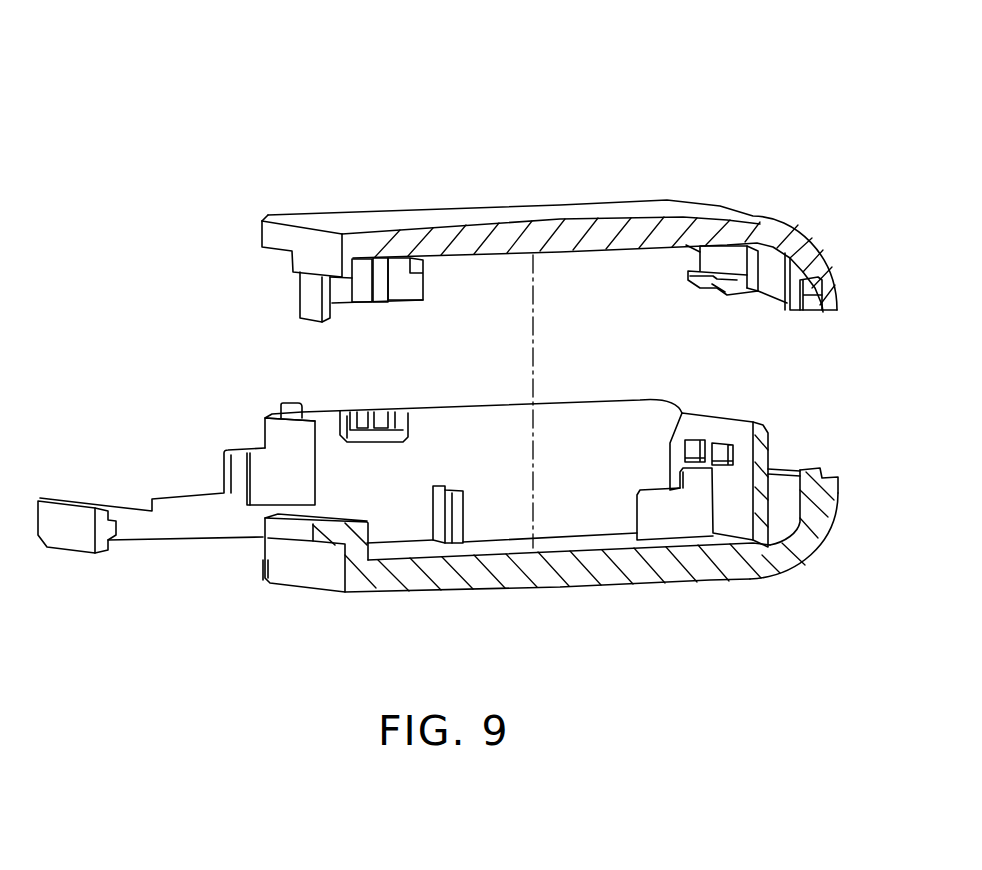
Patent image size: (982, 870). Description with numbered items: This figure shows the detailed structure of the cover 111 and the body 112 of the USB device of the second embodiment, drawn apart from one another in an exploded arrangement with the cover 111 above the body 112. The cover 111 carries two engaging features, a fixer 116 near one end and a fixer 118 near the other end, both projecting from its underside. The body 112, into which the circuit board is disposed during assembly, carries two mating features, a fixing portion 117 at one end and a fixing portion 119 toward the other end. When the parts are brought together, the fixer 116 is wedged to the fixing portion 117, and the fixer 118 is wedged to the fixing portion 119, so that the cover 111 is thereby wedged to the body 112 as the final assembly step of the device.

The cover 111 is at (602, 233).
The body 112 is at (795, 545).
The fixer 116 is at (725, 258).
The fixing portion 117 is at (740, 513).
The fixer 118 is at (347, 292).
The fixing portion 119 is at (368, 413).